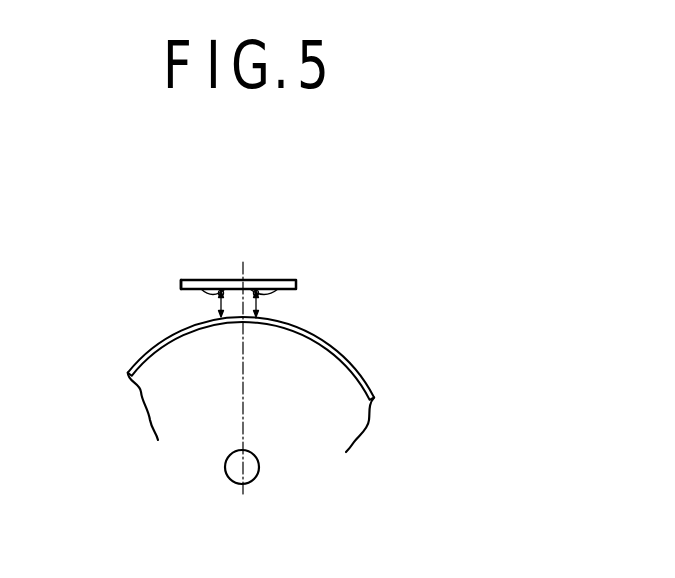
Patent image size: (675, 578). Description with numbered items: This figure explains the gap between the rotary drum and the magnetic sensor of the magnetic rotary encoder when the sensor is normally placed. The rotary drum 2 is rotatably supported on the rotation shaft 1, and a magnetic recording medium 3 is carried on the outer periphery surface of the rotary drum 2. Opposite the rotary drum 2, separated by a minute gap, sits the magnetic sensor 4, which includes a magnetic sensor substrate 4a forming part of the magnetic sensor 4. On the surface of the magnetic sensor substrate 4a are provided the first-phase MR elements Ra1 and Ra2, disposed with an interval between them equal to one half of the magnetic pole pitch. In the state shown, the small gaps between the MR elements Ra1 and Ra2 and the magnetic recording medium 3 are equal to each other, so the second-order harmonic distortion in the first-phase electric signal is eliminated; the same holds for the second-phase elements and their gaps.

The rotation shaft 1 is at (226, 470).
The rotary drum 2 is at (165, 410).
The magnetic recording medium 3 is at (141, 358).
The magnetic sensor 4 is at (297, 285).
The magnetic sensor substrate 4a is at (181, 279).
The MR element Ra1 is at (202, 279).
The MR element Ra2 is at (284, 279).